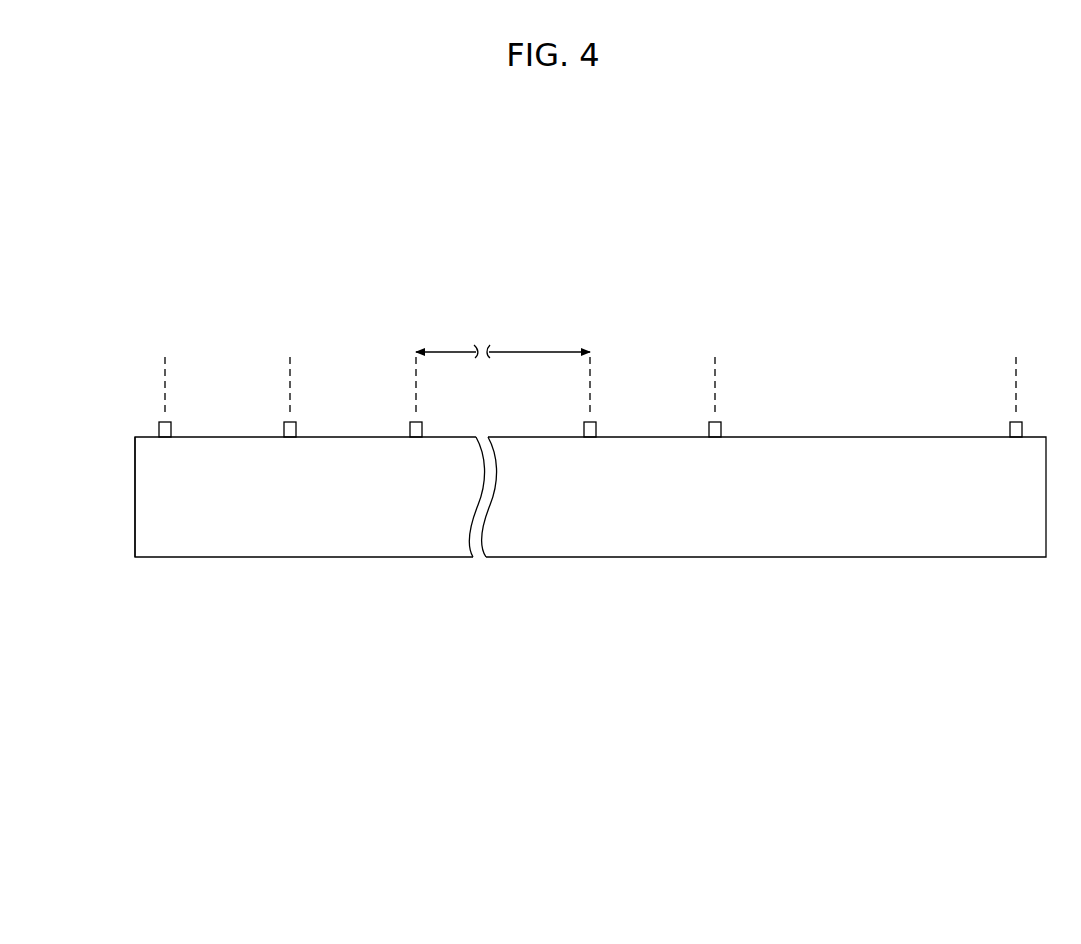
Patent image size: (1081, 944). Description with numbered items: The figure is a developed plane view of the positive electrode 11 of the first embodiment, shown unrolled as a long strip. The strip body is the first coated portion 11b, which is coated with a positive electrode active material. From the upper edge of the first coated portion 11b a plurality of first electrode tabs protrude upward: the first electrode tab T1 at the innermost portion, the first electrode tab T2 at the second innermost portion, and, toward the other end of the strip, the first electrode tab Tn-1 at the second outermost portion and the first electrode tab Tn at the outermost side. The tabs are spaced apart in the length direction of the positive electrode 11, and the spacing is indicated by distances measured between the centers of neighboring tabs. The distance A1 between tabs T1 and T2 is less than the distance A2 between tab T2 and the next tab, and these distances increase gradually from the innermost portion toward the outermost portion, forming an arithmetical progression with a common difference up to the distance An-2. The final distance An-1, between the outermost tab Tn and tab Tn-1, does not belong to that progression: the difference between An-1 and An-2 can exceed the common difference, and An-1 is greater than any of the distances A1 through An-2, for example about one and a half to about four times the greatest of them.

The positive electrode 11 is at (374, 580).
The first coated portion 11b is at (147, 497).
The first electrode tab T1 is at (165, 437).
The first electrode tab T2 is at (290, 437).
The first electrode tab Tn-1 is at (715, 437).
The first electrode tab Tn is at (1016, 437).
The distance A1 is at (165, 352).
The distance A2 is at (290, 352).
The distance An-2 is at (590, 352).
The distance An-1 is at (1016, 352).